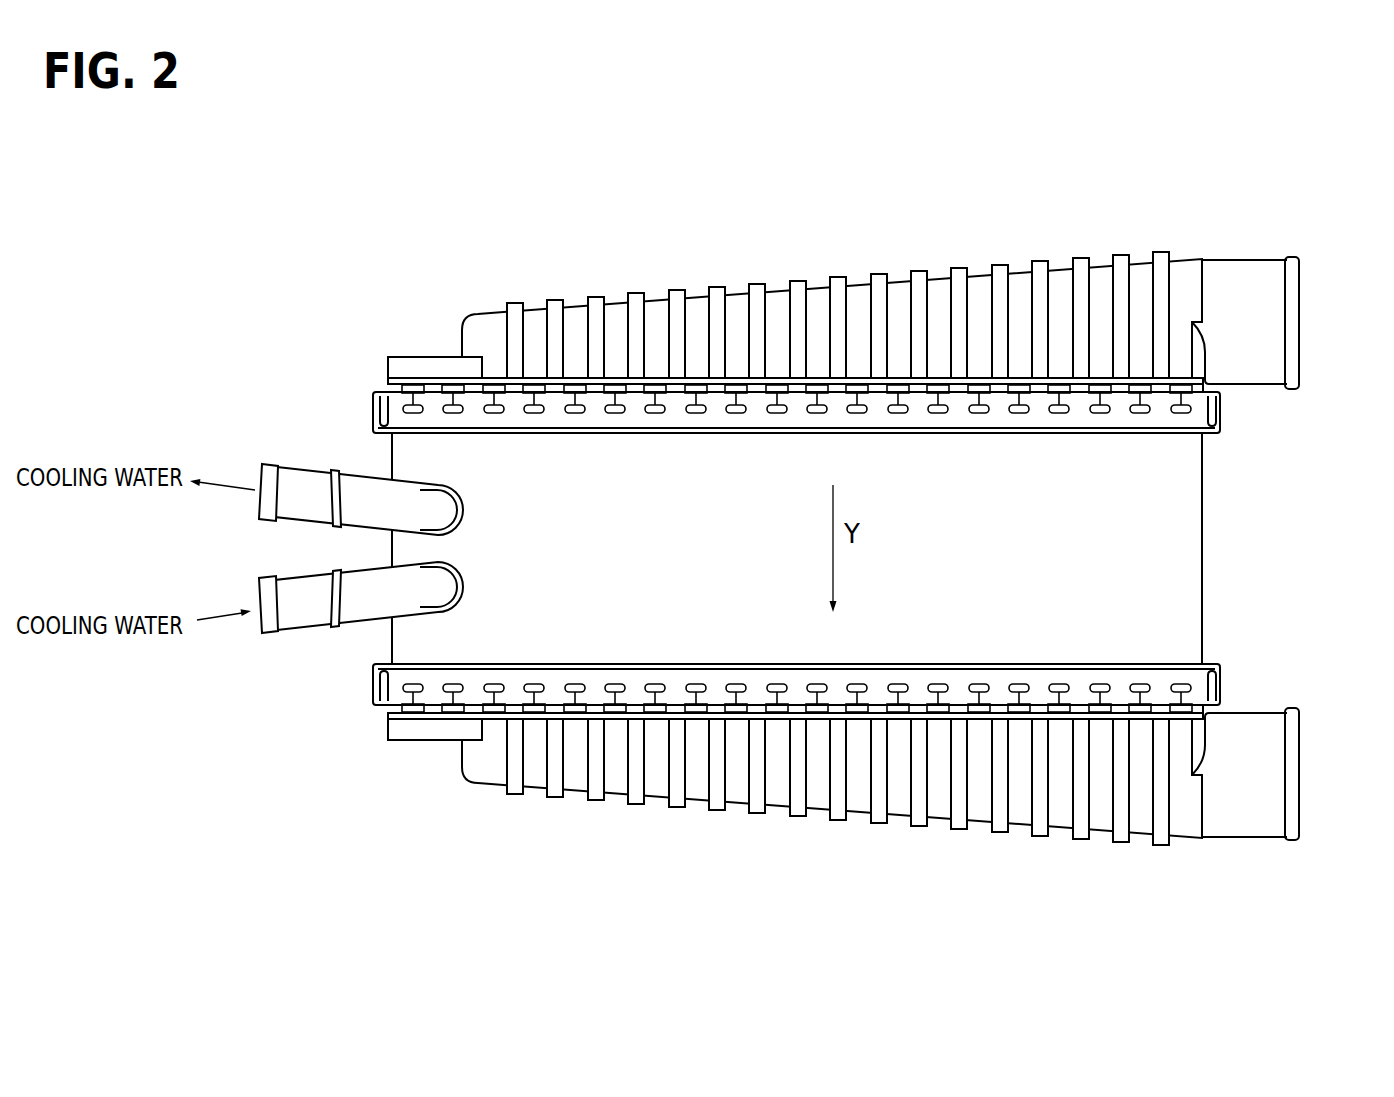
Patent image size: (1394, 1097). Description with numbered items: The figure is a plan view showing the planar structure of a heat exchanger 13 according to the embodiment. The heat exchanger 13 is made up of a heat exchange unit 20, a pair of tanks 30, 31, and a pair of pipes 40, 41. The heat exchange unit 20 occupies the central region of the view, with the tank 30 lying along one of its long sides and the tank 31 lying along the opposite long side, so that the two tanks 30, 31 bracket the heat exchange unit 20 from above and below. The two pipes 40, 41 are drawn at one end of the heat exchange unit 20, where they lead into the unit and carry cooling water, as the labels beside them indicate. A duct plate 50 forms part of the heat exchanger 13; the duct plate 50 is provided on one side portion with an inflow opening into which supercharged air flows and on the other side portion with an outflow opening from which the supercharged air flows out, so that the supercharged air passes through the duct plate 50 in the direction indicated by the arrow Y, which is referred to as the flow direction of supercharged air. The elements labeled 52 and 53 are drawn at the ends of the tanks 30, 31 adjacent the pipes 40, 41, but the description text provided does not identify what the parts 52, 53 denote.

The heat exchanger 13 is at (1245, 216).
The heat exchange unit 20 is at (1270, 530).
The tank 30 is at (858, 275).
The tank 31 is at (862, 822).
The pipe 40 is at (312, 630).
The pipe 41 is at (312, 465).
The duct plate 50 is at (1208, 562).
The upper core plate 52 is at (394, 381).
The lower core plate 53 is at (393, 716).